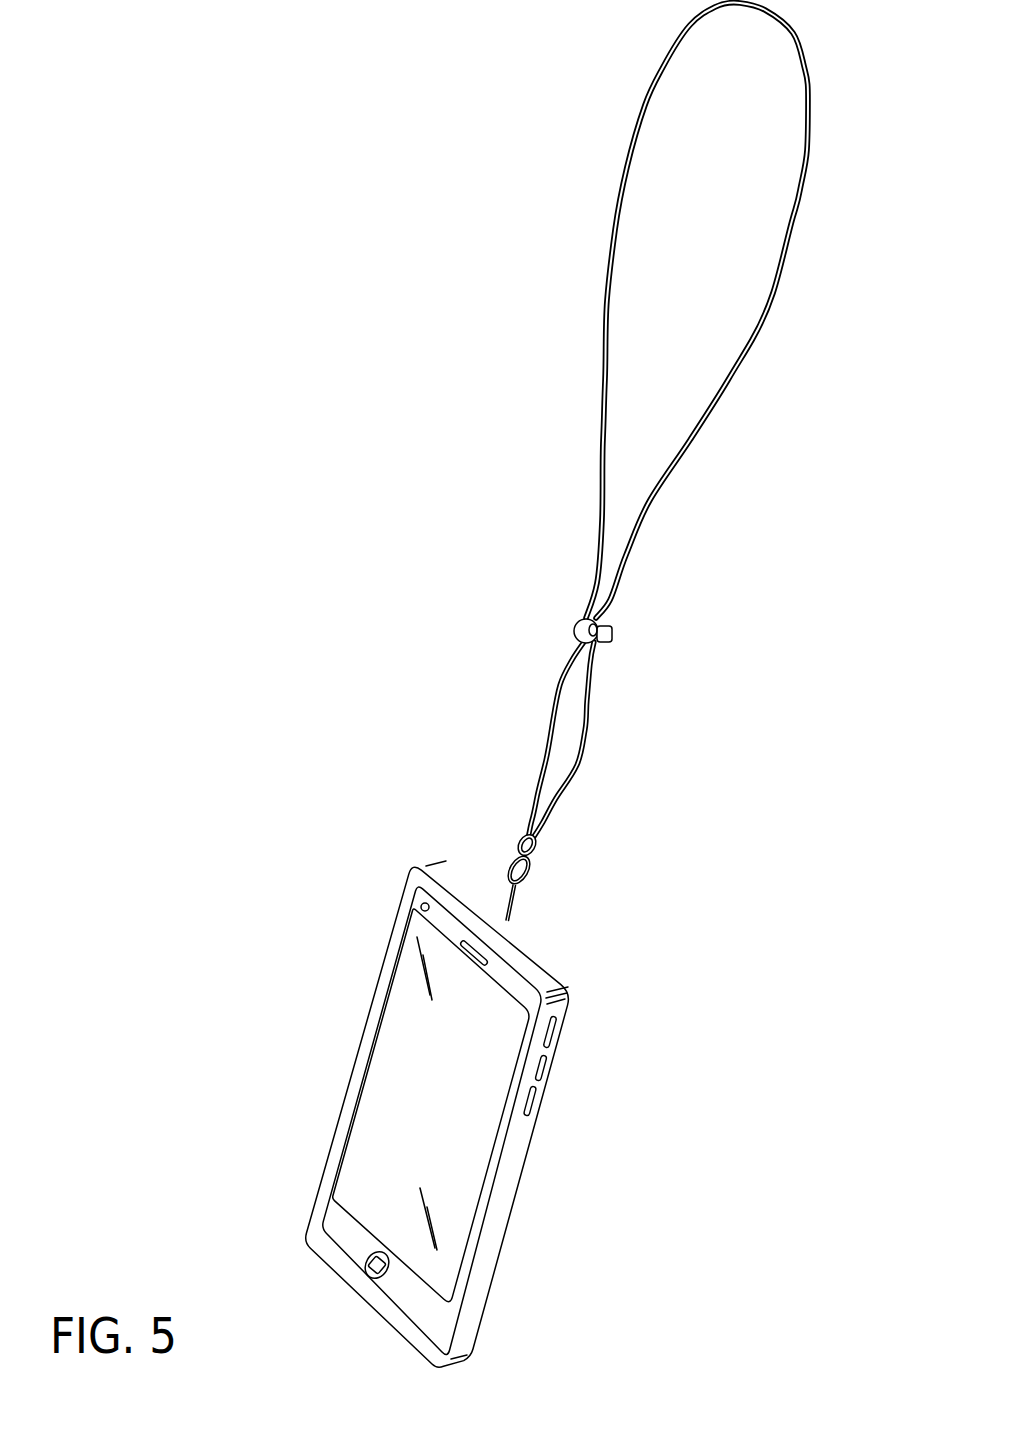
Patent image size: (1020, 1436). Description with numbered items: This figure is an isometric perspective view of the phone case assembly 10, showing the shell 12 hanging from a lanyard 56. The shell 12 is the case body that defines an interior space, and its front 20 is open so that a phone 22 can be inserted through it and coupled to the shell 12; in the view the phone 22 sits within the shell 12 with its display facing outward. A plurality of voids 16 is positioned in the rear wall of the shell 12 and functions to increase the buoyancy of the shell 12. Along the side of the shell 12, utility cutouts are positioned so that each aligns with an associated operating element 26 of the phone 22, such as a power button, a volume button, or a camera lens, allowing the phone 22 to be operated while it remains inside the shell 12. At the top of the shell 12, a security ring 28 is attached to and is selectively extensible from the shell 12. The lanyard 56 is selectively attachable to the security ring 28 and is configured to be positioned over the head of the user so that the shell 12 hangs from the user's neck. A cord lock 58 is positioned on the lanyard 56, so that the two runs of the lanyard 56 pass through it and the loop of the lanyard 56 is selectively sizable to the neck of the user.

The phone case assembly 10 is at (305, 573).
The shell 12 is at (513, 1160).
The voids 16 is at (483, 960).
The front 20 is at (387, 1127).
The phone 22 is at (422, 1048).
The operating element 26 is at (540, 1068).
The security ring 28 is at (530, 884).
The lanyard 56 is at (787, 245).
The cord lock 58 is at (613, 621).